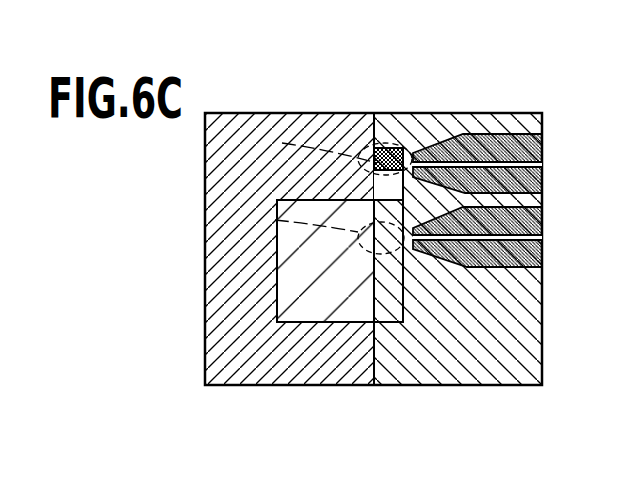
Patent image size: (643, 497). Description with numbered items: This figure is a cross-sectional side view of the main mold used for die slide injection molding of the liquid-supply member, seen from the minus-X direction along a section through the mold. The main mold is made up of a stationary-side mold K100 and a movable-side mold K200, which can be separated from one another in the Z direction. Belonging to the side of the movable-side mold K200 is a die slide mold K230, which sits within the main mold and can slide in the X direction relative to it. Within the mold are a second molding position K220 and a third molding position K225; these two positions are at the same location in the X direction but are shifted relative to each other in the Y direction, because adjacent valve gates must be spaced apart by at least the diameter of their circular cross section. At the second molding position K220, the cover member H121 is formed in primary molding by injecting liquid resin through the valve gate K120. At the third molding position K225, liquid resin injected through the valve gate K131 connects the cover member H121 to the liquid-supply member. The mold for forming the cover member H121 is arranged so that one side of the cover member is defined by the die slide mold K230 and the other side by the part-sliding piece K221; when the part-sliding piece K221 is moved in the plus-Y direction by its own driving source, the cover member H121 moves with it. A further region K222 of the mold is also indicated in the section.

The stationary-side mold K100 is at (493, 127).
The valve gate K120 is at (537, 183).
The valve gate K131 is at (537, 257).
The cover member H121 is at (392, 146).
The movable-side mold K200 is at (278, 138).
The second molding position K220 is at (253, 171).
The part-sliding piece K221 is at (373, 146).
The gap portion K222 is at (388, 298).
The third molding position K225 is at (275, 248).
The die slide mold K230 is at (330, 305).